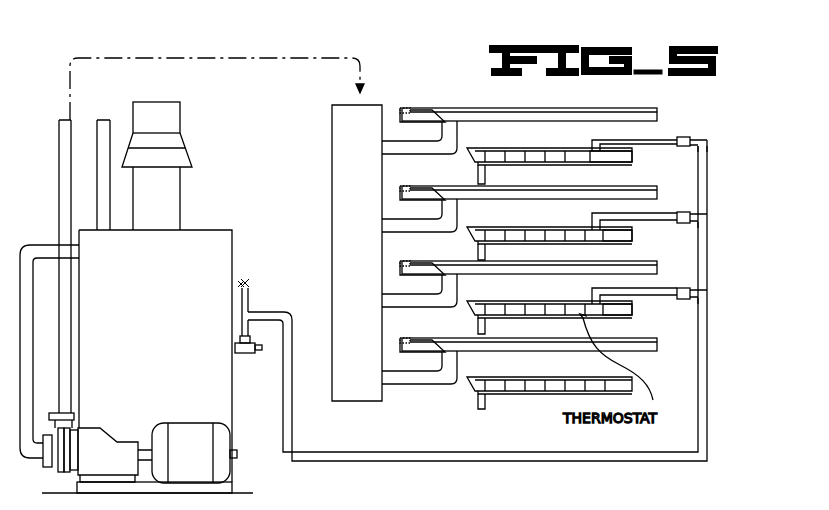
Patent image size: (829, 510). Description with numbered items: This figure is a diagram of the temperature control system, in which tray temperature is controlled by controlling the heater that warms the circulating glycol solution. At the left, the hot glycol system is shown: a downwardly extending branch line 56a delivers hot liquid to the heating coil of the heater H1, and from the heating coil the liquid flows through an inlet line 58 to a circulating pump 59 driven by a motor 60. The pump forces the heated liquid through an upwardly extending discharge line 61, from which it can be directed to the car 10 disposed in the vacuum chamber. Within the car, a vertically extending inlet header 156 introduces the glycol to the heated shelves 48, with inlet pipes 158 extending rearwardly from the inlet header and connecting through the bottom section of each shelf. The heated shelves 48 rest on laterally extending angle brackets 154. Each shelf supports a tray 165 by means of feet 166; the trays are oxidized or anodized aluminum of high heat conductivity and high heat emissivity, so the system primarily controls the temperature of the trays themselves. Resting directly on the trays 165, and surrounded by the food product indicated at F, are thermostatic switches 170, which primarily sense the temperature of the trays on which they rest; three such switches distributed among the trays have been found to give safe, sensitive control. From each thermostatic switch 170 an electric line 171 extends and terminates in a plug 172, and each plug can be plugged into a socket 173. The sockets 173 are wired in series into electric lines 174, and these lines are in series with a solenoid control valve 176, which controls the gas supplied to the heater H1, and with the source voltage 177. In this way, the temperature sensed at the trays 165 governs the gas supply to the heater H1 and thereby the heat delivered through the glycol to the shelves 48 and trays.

The car 10 is at (400, 81).
The heated shelves 48 is at (623, 111).
The branch line 56a is at (99, 119).
The inlet line 58 is at (14, 270).
The circulating pump 59 is at (118, 467).
The motor 60 is at (203, 466).
The discharge line 61 is at (59, 155).
The heater H1 is at (202, 227).
The angle brackets 154 is at (399, 112).
The inlet header 156 is at (331, 240).
The inlet pipes 158 is at (384, 143).
The trays 165 is at (522, 165).
The feet 166 is at (477, 174).
The thermostatic switches 170 is at (593, 163).
The electric lines 171 is at (649, 145).
The plugs 172 is at (681, 136).
The sockets 173 is at (691, 136).
The electric lines 174 is at (291, 426).
The solenoid control valve 176 is at (249, 355).
The source voltage 177 is at (250, 302).
The food product F is at (500, 150).